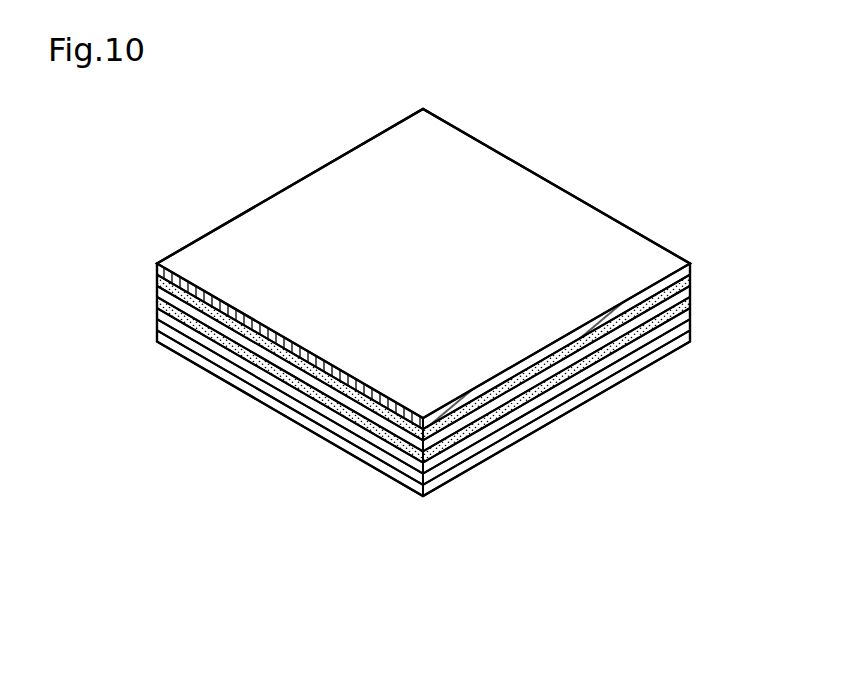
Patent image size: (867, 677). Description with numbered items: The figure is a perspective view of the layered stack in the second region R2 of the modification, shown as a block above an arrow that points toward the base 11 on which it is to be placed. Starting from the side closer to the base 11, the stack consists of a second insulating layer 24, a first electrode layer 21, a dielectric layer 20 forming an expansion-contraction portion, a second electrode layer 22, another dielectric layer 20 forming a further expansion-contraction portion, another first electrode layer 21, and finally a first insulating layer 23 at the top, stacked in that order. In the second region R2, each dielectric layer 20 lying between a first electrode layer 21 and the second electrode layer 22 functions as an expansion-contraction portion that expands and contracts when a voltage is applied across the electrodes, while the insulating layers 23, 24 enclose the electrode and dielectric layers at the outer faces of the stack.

The second region R2 is at (501, 176).
The base 11 is at (423, 522).
The dielectric layer 20 is at (692, 288).
The first electrode layer 21 is at (692, 277).
The second electrode layer 22 is at (692, 302).
The first insulating layer 23 is at (623, 233).
The second insulating layer 24 is at (647, 365).